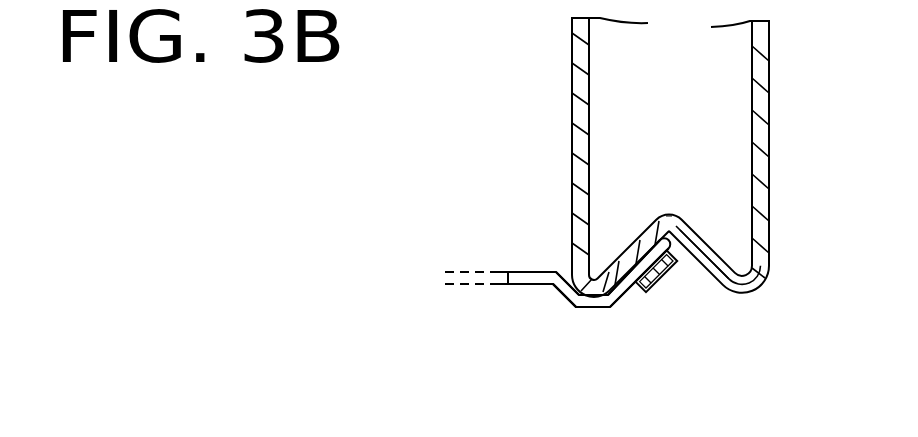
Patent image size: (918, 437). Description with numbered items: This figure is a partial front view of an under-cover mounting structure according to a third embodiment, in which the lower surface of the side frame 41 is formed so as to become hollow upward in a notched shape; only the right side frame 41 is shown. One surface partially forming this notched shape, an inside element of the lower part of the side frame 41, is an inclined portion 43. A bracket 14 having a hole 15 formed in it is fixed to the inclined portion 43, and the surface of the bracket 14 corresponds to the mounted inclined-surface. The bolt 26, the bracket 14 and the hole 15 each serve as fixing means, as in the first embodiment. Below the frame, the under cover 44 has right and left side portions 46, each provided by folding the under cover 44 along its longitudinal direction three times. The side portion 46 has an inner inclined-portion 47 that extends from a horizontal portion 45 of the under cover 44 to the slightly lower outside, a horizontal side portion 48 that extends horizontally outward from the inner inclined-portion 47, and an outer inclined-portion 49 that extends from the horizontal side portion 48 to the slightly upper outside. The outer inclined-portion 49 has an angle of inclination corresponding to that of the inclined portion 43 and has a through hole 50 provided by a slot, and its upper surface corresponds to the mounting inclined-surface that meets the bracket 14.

The side frame 41 is at (570, 112).
The inclined portion 43 is at (616, 262).
The bracket 14 is at (672, 226).
The hole 15 is at (658, 223).
The through hole 50 is at (702, 250).
The under cover 44 is at (537, 288).
The horizontal portion 45 is at (516, 271).
The side portion 46 is at (660, 373).
The inner inclined-portion 47 is at (558, 290).
The horizontal side portion 48 is at (597, 309).
The outer inclined-portion 49 is at (640, 294).
The bolt 26 is at (666, 276).